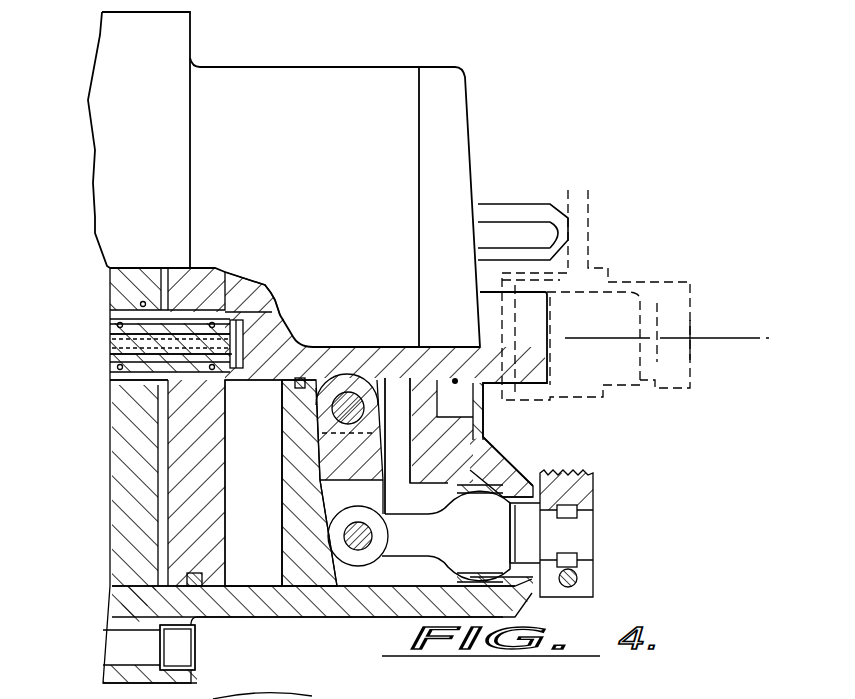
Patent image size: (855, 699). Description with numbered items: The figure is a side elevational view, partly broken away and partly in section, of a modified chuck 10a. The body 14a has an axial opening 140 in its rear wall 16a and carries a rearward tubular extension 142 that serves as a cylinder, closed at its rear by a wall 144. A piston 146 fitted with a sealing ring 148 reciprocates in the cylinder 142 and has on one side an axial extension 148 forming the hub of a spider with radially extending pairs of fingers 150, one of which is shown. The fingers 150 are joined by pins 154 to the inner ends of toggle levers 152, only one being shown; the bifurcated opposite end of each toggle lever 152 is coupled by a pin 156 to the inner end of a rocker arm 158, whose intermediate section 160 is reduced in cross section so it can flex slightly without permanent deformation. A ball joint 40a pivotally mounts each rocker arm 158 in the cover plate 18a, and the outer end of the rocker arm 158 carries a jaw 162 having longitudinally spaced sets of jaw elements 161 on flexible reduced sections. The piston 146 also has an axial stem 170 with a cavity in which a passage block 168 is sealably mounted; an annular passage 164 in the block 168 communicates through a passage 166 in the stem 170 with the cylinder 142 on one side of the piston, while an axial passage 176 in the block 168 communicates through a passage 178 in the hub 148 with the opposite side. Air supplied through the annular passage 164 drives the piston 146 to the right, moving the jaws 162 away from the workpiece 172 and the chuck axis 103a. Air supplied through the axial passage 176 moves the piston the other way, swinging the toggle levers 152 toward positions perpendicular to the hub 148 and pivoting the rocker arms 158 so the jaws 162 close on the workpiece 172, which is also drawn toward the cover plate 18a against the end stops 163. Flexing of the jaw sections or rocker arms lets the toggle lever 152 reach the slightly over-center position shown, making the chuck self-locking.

The end stops 163 is at (520, 210).
The workpiece 172 is at (610, 277).
The chuck axis 103a is at (719, 335).
The passage 166 is at (160, 305).
The annular passage 164 is at (110, 330).
The axial passage 176 is at (110, 345).
The passage block 168 is at (100, 365).
The axial stem 170 is at (125, 390).
The passage 178 is at (232, 317).
The sealing ring / axial extension (hub) 148 is at (285, 323).
The axial opening 140 is at (305, 380).
The pins 154 is at (353, 393).
The fingers 150 is at (375, 386).
The piston 146 is at (213, 452).
The rear wall 16a is at (297, 467).
The toggle lever 152 is at (338, 478).
The rocker arm 158 is at (433, 515).
The cover plate 18a is at (480, 428).
The ball joint 40a is at (496, 484).
The jaw elements 161 is at (547, 473).
The jaw 162 is at (590, 495).
The wall 144 is at (122, 483).
The chuck 10a is at (82, 600).
The rearward tubular extension (cylinder) 142 is at (228, 610).
The intermediate section 160 is at (428, 533).
The pin 156 is at (347, 550).
The body 14a is at (325, 612).